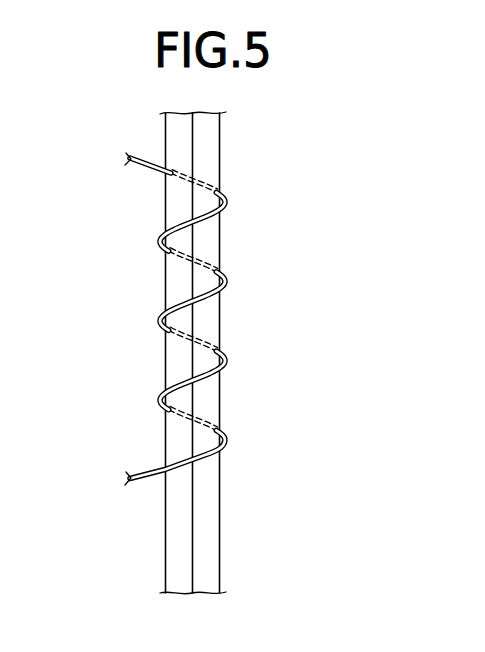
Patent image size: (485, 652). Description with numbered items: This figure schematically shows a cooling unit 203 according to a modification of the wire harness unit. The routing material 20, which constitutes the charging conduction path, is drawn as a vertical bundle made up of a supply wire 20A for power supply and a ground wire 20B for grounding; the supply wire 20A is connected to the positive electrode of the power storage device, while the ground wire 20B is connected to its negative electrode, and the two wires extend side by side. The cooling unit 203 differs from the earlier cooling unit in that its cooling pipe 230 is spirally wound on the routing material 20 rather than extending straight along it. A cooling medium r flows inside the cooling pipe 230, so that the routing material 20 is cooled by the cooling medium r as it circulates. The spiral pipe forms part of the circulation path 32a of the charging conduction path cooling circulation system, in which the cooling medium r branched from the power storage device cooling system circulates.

The routing material 20 is at (253, 353).
The supply wire 20A is at (178, 130).
The ground wire 20B is at (208, 160).
The cooling unit 203 is at (268, 245).
The cooling pipe 230 is at (173, 359).
The cooling medium r is at (147, 171).
The circulation path 32a is at (149, 499).